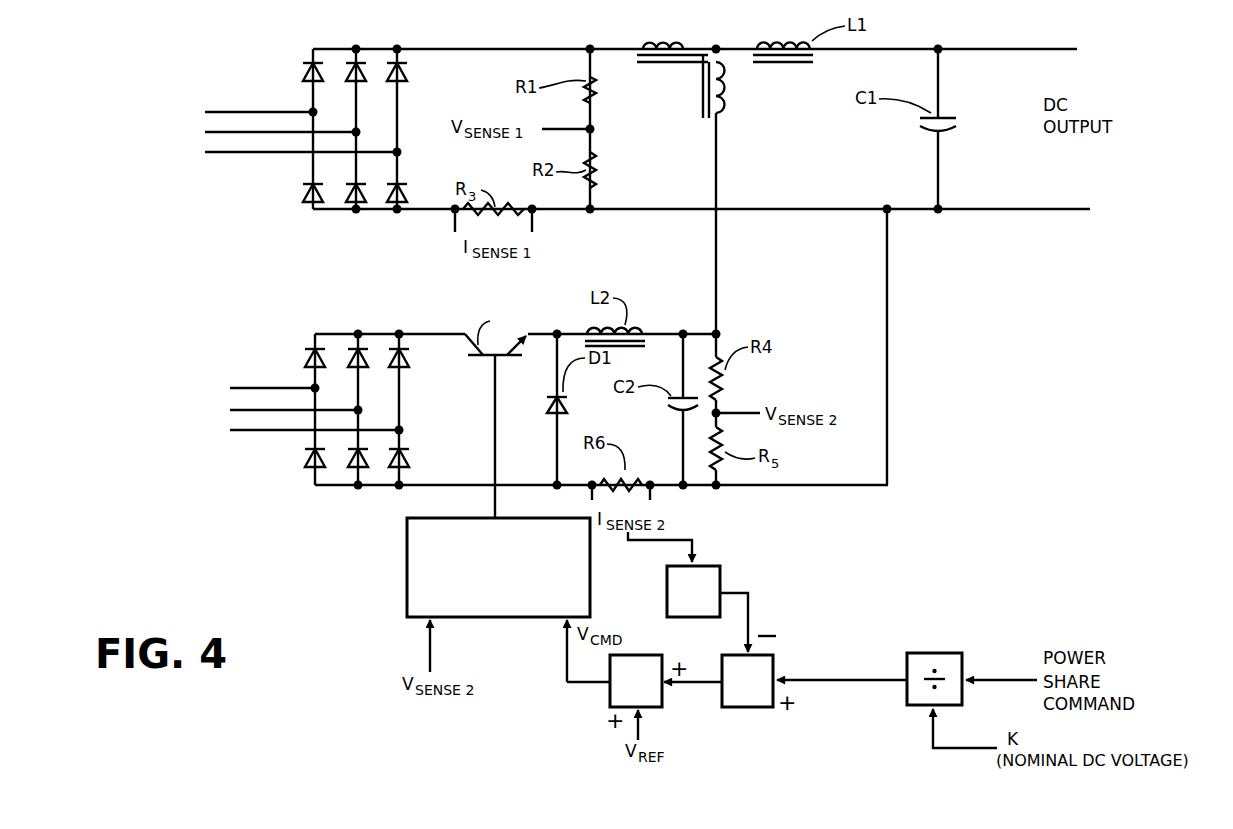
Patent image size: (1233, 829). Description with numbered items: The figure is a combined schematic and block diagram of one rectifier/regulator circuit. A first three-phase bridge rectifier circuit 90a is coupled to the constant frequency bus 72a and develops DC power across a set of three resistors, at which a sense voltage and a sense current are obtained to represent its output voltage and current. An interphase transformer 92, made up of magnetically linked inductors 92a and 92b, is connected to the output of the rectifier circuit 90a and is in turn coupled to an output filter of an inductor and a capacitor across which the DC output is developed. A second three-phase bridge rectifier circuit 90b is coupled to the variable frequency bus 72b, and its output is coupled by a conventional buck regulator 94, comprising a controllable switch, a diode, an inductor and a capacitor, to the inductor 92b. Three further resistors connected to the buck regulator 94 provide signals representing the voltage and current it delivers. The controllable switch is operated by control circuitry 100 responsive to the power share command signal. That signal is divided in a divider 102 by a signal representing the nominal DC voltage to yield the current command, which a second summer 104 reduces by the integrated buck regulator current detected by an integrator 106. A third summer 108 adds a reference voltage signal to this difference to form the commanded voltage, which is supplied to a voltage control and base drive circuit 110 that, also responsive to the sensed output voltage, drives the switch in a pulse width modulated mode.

The first three-phase bridge rectifier circuit 90a is at (289, 80).
The bus 72a is at (270, 166).
The interphase transformer 92 is at (692, 73).
The inductor 92a is at (651, 41).
The inductor 92b is at (726, 104).
The second three-phase bridge rectifier circuit 90b is at (288, 365).
The bus 72b is at (272, 442).
The buck regulator 94 is at (444, 324).
The voltage control and base drive circuit 110 is at (407, 535).
The third summer 108 is at (607, 696).
The second summer 104 is at (742, 708).
The integrator 106 is at (722, 576).
The divider 102 is at (935, 652).
The control circuitry 100 is at (812, 620).